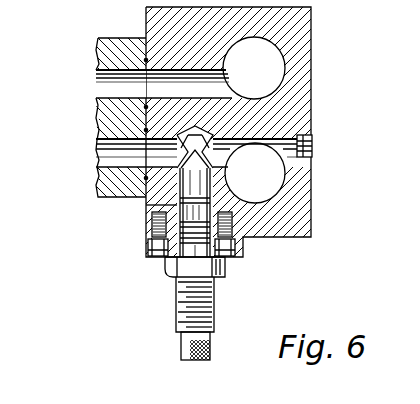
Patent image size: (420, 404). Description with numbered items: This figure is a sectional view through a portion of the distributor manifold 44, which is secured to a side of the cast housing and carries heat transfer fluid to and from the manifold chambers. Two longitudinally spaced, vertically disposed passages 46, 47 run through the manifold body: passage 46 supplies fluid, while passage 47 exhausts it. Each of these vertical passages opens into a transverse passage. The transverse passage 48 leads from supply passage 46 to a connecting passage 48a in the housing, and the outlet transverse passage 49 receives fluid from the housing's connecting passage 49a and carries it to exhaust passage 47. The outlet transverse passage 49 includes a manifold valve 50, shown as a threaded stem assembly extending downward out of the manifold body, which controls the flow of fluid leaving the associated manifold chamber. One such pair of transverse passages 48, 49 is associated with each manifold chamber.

The distributor manifold 44 is at (305, 26).
The vertically disposed passage 46 is at (275, 72).
The vertically disposed passage 47 is at (277, 182).
The transverse passage 48 is at (192, 82).
The connecting passage 48a is at (107, 98).
The transverse passage 49 is at (157, 146).
The connecting passage 49a is at (107, 166).
The manifold valve 50 is at (171, 283).